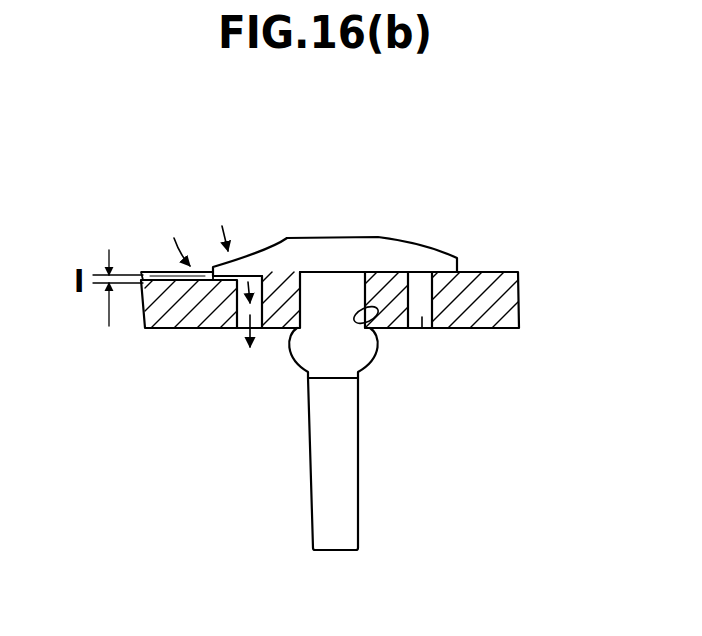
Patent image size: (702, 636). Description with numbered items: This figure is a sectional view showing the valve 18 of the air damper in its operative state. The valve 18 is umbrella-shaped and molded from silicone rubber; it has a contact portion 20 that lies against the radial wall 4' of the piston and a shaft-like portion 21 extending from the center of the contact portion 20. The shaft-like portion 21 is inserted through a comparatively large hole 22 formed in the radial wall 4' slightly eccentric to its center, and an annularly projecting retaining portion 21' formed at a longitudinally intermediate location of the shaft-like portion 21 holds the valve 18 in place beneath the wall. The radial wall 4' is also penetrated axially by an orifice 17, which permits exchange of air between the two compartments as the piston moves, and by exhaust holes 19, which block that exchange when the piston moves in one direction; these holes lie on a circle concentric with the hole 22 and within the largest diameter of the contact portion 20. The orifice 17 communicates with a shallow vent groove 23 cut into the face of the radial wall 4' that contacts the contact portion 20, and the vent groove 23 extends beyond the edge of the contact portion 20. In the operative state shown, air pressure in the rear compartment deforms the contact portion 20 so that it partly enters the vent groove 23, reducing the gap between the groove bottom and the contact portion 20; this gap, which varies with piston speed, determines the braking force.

The radial wall 4' is at (352, 263).
The orifice 17 is at (243, 330).
The valve 18 is at (366, 231).
The exhaust holes 19 is at (429, 330).
The contact portion 20 is at (265, 250).
The shaft-like portion 21 is at (364, 464).
The retaining portion 21' is at (351, 382).
The hole 22 is at (366, 309).
The vent groove 23 is at (207, 272).